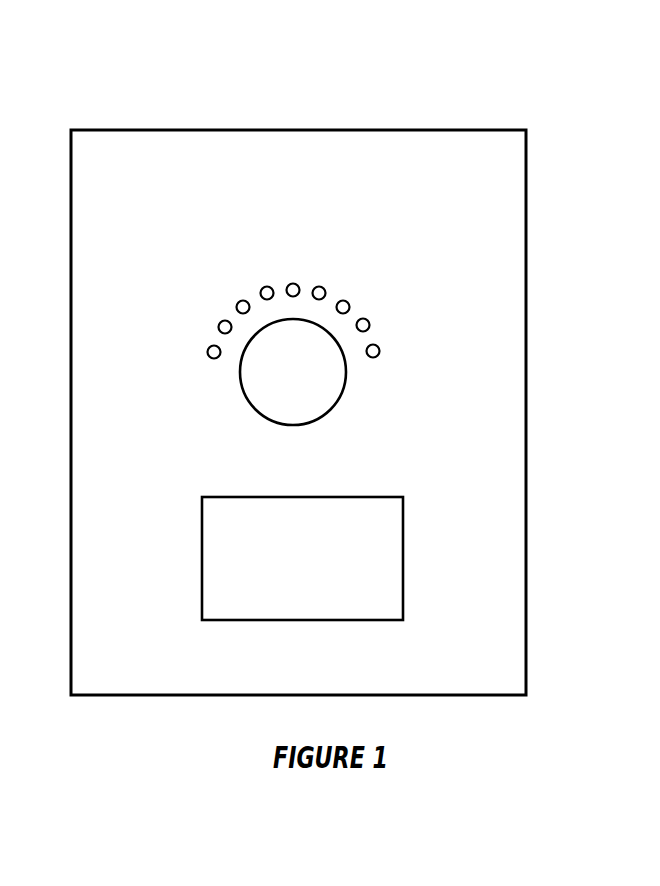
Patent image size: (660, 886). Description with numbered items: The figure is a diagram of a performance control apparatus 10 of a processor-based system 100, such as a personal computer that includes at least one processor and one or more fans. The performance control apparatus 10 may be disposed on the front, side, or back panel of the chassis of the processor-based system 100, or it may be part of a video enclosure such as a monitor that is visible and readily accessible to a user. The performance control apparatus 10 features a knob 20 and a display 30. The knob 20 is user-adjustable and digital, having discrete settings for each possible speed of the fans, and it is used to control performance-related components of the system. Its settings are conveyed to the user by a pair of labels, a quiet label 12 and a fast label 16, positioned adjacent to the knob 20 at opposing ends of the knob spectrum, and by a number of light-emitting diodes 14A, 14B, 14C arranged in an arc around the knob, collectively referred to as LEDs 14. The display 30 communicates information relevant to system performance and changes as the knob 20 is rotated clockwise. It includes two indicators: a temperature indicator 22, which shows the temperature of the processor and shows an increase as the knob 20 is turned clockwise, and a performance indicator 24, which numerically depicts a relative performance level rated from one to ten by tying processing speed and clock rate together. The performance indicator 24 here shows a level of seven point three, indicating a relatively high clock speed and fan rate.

The processor-based system 100 is at (566, 84).
The performance control apparatus 10 is at (527, 197).
The quiet label 12 is at (178, 364).
The light-emitting diodes 14 is at (283, 309).
The light-emitting diode 14A is at (209, 345).
The light-emitting diode 14B is at (221, 320).
The light-emitting diode 14C is at (241, 300).
The fast label 16 is at (412, 360).
The knob 20 is at (322, 418).
The temperature indicator 22 is at (248, 540).
The performance indicator 24 is at (238, 579).
The display 30 is at (405, 545).